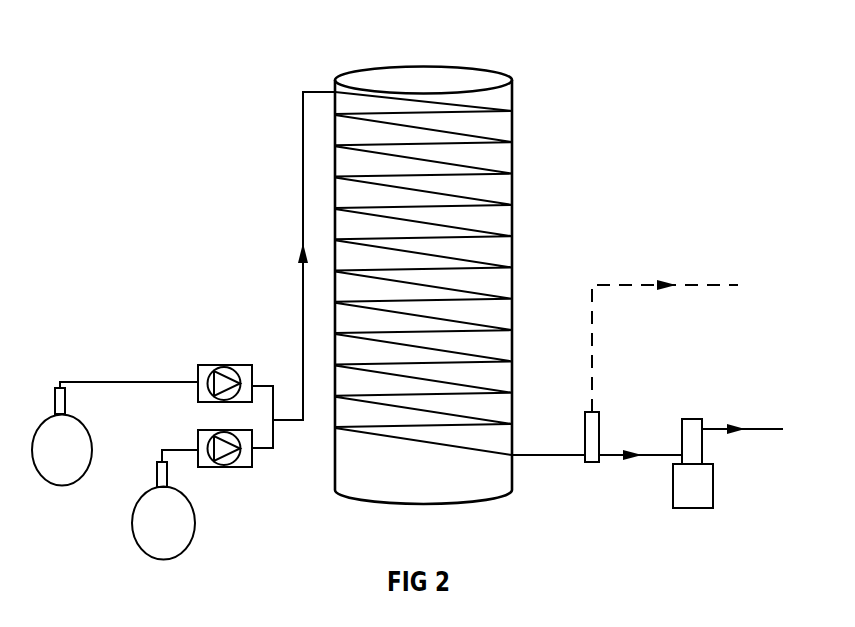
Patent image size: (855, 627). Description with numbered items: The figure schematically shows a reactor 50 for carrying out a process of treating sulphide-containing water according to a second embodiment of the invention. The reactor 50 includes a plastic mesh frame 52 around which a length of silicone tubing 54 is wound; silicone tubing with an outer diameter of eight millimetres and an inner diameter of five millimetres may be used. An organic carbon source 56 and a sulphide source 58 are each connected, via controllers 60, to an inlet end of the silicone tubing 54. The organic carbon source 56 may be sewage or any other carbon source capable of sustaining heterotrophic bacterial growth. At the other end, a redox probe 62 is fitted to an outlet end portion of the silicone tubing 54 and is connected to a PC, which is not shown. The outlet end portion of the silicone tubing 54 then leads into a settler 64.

The reactor 50 is at (615, 116).
The plastic mesh frame 52 is at (513, 94).
The silicone tubing 54 is at (498, 198).
The organic carbon source 56 is at (82, 457).
The sulphide source 58 is at (180, 537).
The controllers 60 is at (220, 373).
The redox probe 62 is at (595, 430).
The settler 64 is at (690, 488).